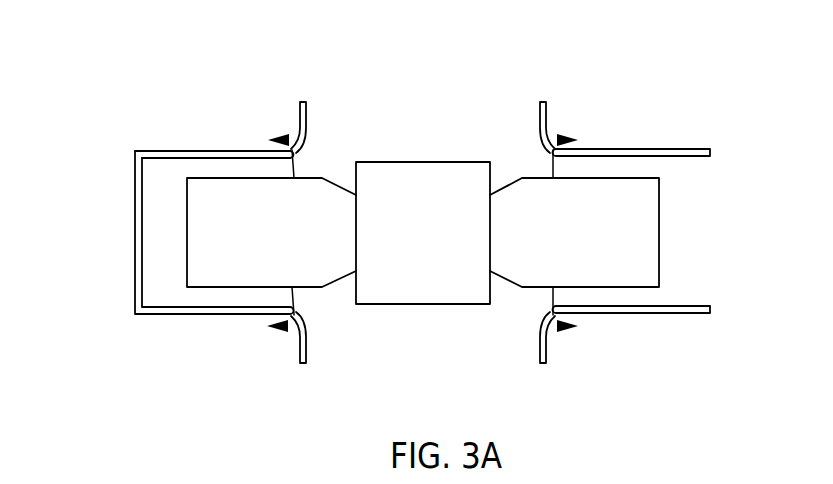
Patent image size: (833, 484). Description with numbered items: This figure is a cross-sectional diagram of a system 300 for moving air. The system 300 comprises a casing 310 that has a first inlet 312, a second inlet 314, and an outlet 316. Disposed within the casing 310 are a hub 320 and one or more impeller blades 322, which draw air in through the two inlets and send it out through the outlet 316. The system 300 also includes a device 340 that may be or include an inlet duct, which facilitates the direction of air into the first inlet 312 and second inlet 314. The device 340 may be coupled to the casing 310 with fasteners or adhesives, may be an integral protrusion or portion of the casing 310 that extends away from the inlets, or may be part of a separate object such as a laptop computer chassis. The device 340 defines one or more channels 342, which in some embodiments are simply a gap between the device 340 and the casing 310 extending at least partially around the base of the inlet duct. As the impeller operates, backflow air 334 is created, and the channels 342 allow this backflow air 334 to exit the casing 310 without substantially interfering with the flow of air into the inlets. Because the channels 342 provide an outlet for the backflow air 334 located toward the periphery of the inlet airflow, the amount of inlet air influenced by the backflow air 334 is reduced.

The system 300 is at (130, 83).
The casing 310 is at (135, 173).
The first inlet 312 is at (305, 96).
The second inlet 314 is at (307, 368).
The outlet 316 is at (728, 162).
The hub 320 is at (403, 162).
The impeller blades 322 is at (187, 232).
The backflow air 334 is at (296, 153).
The device 340 is at (178, 150).
The channels 342 is at (293, 134).